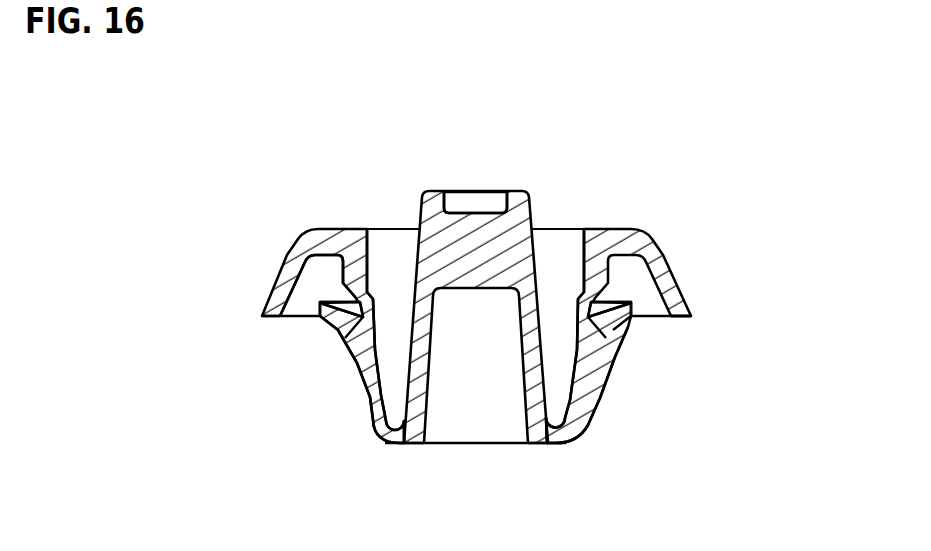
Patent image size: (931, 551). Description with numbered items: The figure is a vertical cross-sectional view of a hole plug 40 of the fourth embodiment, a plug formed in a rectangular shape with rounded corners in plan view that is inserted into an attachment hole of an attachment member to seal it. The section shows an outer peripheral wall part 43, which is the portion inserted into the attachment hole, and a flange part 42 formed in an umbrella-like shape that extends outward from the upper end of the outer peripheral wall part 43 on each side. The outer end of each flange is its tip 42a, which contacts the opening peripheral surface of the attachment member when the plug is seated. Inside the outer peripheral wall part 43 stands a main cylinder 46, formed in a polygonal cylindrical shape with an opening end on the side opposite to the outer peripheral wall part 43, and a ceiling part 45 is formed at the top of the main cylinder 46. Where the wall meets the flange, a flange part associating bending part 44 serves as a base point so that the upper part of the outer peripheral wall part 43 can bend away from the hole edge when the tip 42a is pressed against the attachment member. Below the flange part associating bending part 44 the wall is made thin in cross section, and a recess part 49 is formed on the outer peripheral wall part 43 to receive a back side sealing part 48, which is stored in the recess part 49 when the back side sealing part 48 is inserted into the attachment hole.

The hole plug 40 is at (508, 53).
The flange part 42 is at (262, 312).
The tip of the flange part 42a is at (694, 317).
The outer peripheral wall part 43 is at (308, 266).
The flange part associating bending part 44 is at (377, 300).
The ceiling part 45 is at (478, 191).
The main cylinder 46 is at (430, 398).
The back side sealing part 48 is at (320, 313).
The recess part 49 is at (338, 334).